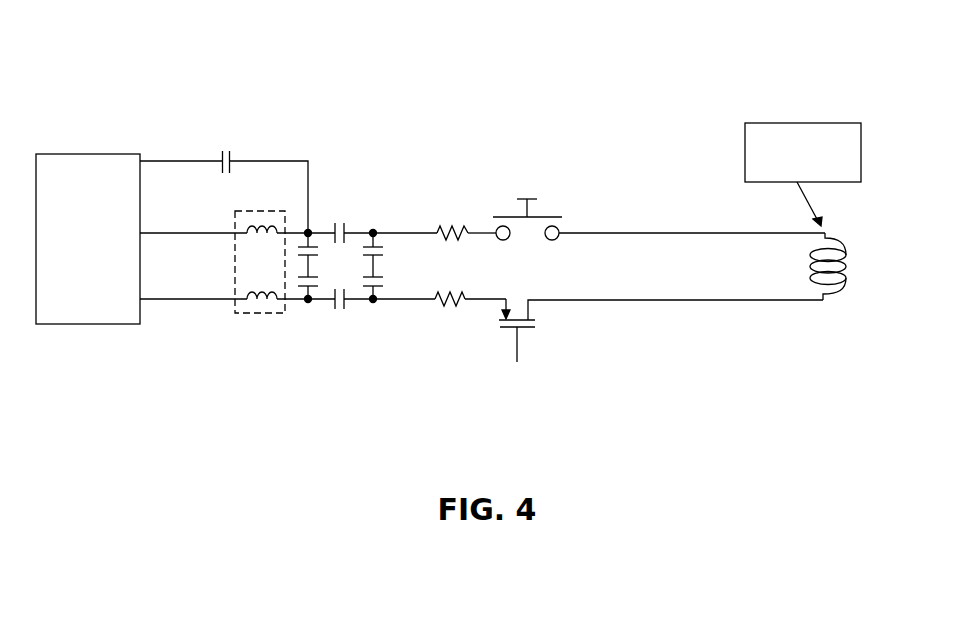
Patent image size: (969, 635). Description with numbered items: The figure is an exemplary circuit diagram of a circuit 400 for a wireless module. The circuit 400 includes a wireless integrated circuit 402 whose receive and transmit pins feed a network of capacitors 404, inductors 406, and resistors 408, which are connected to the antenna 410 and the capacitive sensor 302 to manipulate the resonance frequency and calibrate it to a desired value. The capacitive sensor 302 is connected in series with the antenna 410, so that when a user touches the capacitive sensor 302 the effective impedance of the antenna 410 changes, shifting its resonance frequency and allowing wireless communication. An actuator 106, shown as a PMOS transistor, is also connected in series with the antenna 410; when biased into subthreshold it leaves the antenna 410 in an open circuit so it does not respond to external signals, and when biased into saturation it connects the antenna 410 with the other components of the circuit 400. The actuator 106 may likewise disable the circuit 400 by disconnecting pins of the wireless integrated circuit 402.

The circuit 400 is at (470, 32).
The wireless integrated circuit 402 is at (86, 153).
The capacitors 404 is at (224, 153).
The inductors 406 is at (261, 303).
The resistors 408 is at (458, 224).
The capacitive sensor 302 is at (533, 195).
The actuator 106 is at (520, 352).
The antenna 410 is at (817, 303).